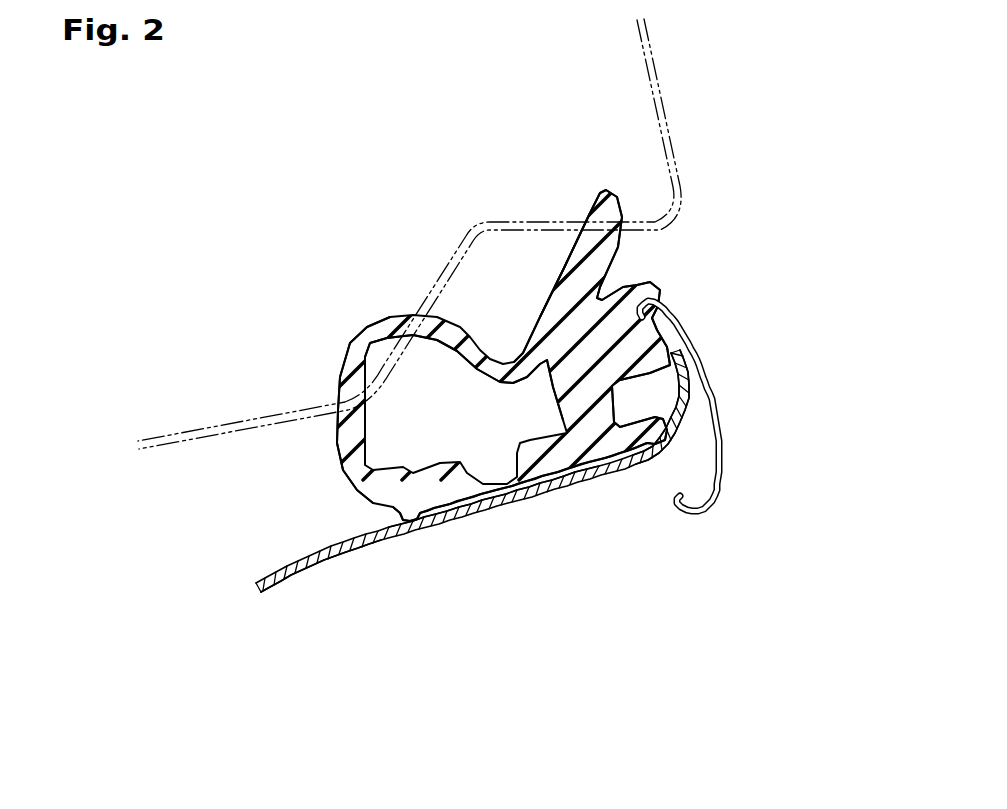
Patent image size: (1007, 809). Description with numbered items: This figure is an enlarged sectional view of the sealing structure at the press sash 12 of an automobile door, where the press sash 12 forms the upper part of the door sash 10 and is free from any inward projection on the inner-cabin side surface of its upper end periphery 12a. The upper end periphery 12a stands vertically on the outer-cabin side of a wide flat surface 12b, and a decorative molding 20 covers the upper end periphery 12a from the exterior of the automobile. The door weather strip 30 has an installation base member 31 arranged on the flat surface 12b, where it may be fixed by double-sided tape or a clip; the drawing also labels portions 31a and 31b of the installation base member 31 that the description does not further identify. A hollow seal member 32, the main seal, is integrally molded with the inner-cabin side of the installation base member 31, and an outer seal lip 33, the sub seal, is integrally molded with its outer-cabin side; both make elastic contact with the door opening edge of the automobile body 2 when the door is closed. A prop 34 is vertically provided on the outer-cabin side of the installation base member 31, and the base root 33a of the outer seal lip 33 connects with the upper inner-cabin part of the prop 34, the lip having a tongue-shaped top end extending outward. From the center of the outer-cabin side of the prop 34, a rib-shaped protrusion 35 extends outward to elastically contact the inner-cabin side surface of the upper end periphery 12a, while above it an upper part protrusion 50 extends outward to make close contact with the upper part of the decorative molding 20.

The automobile body 2 is at (670, 113).
The door sash 10 is at (303, 613).
The press sash 12 is at (363, 547).
The upper end periphery 12a is at (682, 378).
The flat surface 12b is at (479, 497).
The decorative molding 20 is at (722, 403).
The door weather strip 30 is at (685, 264).
The installation base member 31 is at (531, 460).
The bottom wall protrusion 31a is at (648, 440).
The bottom wall foot 31b is at (413, 493).
The hollow seal member 32 is at (345, 362).
The outer seal lip 33 is at (607, 212).
The base root 33a is at (563, 337).
The prop 34 is at (563, 377).
The rib-shaped protrusion 35 is at (658, 350).
The upper part protrusion 50 is at (648, 290).